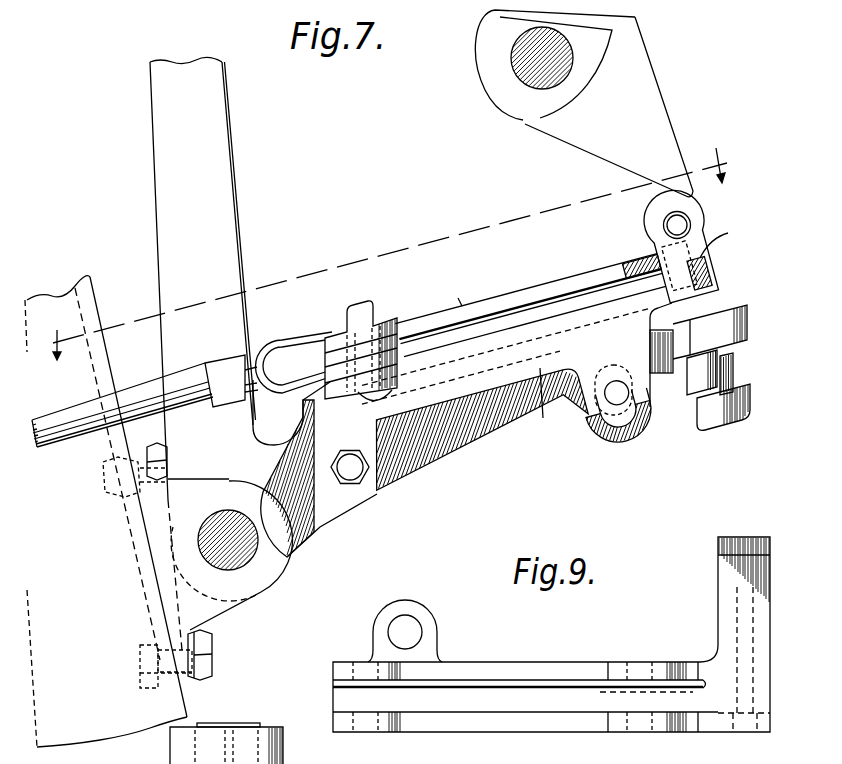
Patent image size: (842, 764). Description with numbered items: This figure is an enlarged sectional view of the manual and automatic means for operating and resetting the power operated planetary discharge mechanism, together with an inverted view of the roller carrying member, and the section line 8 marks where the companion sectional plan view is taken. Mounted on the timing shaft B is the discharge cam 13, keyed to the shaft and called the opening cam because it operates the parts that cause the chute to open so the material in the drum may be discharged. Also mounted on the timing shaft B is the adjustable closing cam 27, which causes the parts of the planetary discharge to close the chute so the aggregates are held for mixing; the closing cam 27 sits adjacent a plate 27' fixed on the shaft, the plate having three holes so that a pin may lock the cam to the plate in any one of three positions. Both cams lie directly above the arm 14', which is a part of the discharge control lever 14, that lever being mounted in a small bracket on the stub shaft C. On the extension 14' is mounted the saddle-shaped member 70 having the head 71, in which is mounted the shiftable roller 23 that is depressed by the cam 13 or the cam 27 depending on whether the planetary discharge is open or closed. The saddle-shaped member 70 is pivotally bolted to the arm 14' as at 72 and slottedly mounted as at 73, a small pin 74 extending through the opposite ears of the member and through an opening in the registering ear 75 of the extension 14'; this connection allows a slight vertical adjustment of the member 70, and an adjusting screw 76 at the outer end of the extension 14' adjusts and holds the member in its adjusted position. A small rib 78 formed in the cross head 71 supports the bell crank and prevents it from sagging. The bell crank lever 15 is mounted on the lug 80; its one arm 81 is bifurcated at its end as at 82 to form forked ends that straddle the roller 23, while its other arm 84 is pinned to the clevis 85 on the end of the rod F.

In FIG. 7, the discharge control lever 14 is at (213, 353).
In FIG. 7, the arm 14' is at (477, 466).
In FIG. 7, the section line 8— 8 is at (387, 254).
In FIG. 7, the plate 27' is at (580, 65).
In FIG. 7, the closing cam 27 is at (583, 67).
In FIG. 7, the timing shaft B is at (530, 72).
In FIG. 7, the discharge cam 13 is at (650, 155).
In FIG. 7, the rod F is at (60, 427).
In FIG. 7, the clevis 85 is at (292, 340).
In FIG. 7, the arm 84 is at (397, 327).
In FIG. 7, the lug 80 is at (390, 381).
In FIG. 9, the lug 80 is at (428, 620).
In FIG. 7, the bell crank lever 15 is at (509, 329).
In FIG. 7, the arm 81 is at (593, 263).
In FIG. 7, the saddle-shaped member 70 is at (713, 280).
In FIG. 9, the saddle-shaped member 70 is at (558, 668).
In FIG. 7, the registering ear 75 is at (620, 438).
In FIG. 7, the small pin 74 is at (612, 398).
In FIG. 7, the slotted mounting 73 is at (633, 400).
In FIG. 7, the head 71 is at (663, 240).
In FIG. 9, the head 71 is at (762, 587).
In FIG. 7, the shiftable roller 23 is at (702, 223).
In FIG. 7, the forked ends 82 is at (648, 270).
In FIG. 9, the forked ends 82 is at (663, 728).
In FIG. 7, the rib 78 is at (687, 265).
In FIG. 9, the rib 78 is at (753, 672).
In FIG. 7, the adjusting screw 76 is at (733, 383).
In FIG. 7, the pivot bolt 72 is at (350, 465).
In FIG. 7, the stub shaft C is at (240, 553).